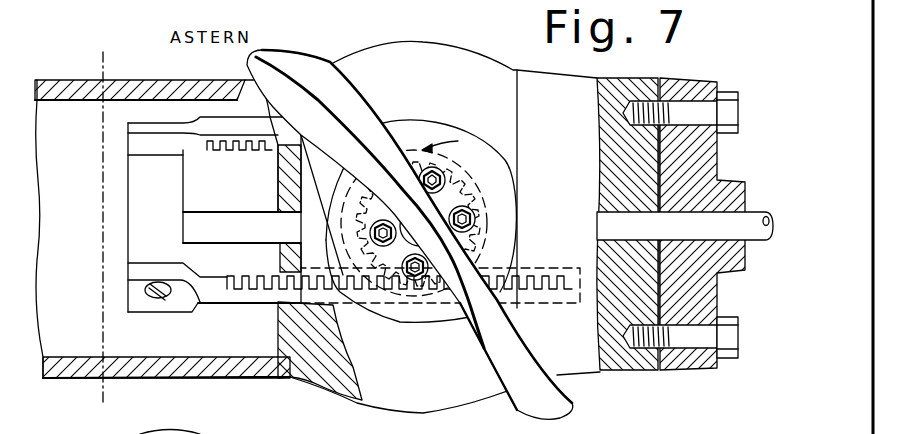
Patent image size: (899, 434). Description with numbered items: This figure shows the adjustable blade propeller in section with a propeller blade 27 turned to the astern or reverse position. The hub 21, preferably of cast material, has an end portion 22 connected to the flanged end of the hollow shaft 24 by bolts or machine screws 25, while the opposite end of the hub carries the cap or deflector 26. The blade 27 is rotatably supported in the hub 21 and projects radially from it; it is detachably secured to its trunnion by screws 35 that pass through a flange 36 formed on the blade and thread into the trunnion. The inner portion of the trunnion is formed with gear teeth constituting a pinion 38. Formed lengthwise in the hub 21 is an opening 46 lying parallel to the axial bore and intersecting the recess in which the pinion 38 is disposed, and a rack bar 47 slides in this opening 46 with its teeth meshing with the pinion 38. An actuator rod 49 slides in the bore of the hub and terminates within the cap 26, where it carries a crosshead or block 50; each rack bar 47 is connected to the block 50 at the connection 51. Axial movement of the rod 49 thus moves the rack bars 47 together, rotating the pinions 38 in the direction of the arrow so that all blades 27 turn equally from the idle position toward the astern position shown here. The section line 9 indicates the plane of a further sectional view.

The section line 9- 9 is at (140, 65).
The hub 21 is at (455, 55).
The end portion 22 is at (649, 364).
The hollow shaft 24 is at (727, 180).
The bolts or machine screws 25 is at (737, 97).
The cap or deflector 26 is at (240, 372).
The blade 27 is at (357, 110).
The screws 35 is at (473, 222).
The flange 36 is at (453, 137).
The pinion 38 is at (478, 185).
The opening 46 is at (280, 265).
The rack bar 47 is at (203, 147).
The actuator rod 49 is at (233, 218).
The crosshead or block 50 is at (142, 197).
The connection 51 is at (147, 290).